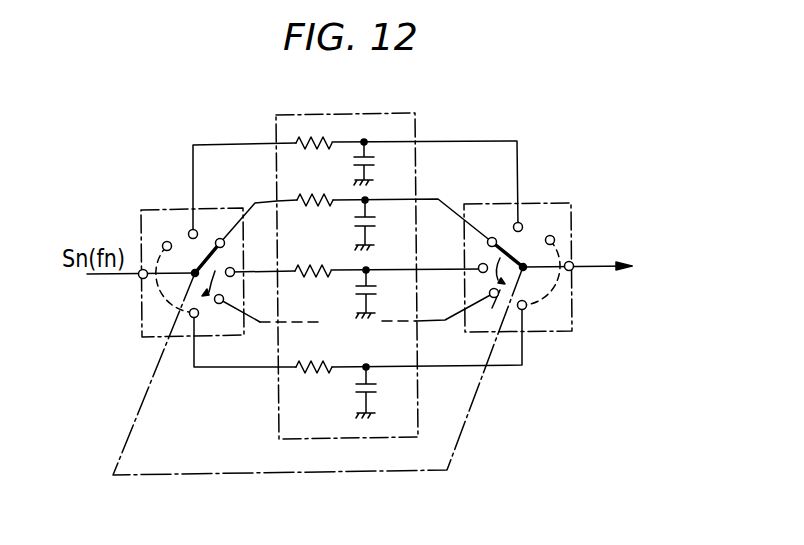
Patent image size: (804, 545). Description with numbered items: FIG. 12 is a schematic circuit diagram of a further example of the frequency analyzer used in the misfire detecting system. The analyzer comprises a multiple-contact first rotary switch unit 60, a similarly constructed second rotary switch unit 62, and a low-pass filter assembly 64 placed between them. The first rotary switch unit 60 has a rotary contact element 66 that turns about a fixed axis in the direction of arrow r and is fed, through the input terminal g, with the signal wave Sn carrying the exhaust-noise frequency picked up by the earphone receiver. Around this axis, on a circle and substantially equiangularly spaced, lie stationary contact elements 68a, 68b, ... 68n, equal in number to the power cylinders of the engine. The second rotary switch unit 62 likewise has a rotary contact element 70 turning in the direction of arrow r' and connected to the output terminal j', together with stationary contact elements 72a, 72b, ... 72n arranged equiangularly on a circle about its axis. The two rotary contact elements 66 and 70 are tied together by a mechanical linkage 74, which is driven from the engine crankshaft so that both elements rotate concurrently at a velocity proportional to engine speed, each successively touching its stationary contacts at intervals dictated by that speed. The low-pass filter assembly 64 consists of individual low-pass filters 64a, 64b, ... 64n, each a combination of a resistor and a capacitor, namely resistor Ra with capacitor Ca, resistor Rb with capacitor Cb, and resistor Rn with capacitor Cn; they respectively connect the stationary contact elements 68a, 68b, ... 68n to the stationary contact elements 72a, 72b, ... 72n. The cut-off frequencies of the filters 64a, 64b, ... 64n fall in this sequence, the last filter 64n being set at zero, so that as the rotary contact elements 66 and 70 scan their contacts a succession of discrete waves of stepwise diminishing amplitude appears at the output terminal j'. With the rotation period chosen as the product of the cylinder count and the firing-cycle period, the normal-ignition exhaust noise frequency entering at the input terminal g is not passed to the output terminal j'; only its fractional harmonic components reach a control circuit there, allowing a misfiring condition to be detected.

The first rotary switch unit 60 is at (137, 226).
The second rotary switch unit 62 is at (576, 200).
The low-pass filter assembly 64 is at (420, 120).
The low-pass filter 64a is at (353, 135).
The low-pass filter 64b is at (344, 226).
The low-pass filter 64n is at (350, 376).
The rotary contact element 66 is at (208, 263).
The stationary contact element 68a is at (193, 229).
The stationary contact element 68b is at (220, 238).
The stationary contact element 68n is at (168, 241).
The rotary contact element 70 is at (520, 263).
The stationary contact element 72a is at (518, 222).
The stationary contact element 72b is at (492, 237).
The stationary contact element 72n is at (555, 240).
The mechanical linkage 74 is at (158, 368).
The resistor Ra is at (352, 109).
The resistor Rb is at (307, 216).
The resistor Rn is at (313, 351).
The capacitor Ca is at (370, 151).
The capacitor Cb is at (375, 213).
The capacitor Cn is at (372, 380).
The input terminal g is at (141, 279).
The output terminal j' is at (583, 282).